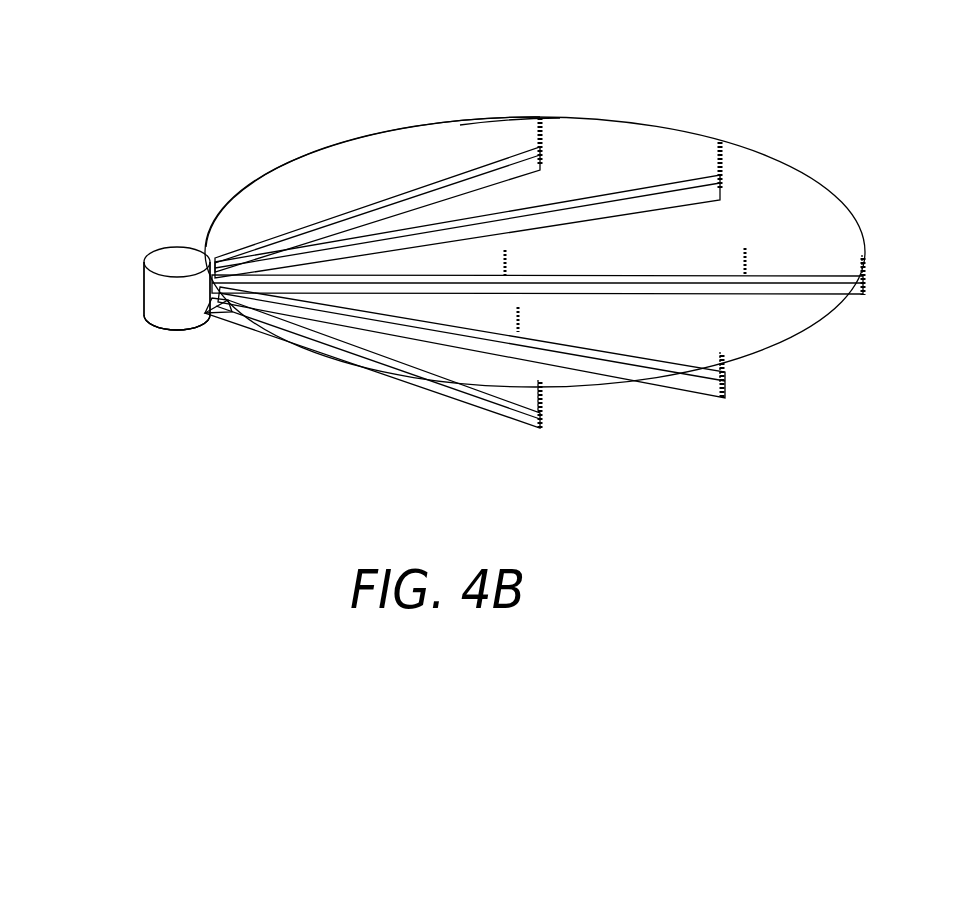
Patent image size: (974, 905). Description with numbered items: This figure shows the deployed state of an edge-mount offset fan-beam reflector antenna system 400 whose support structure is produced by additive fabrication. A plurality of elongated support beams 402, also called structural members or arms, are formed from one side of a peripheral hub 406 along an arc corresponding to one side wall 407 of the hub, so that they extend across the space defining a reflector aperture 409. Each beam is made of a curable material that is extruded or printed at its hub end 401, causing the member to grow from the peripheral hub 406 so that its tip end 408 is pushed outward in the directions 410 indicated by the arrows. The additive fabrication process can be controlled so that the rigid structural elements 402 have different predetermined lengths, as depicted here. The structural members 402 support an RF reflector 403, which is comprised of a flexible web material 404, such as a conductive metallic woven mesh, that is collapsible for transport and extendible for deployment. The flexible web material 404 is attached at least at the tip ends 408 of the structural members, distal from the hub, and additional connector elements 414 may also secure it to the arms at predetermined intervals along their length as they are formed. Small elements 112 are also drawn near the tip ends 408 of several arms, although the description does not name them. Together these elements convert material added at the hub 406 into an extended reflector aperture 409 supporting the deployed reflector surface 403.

The sensor 112 is at (864, 258).
The antenna system 400 is at (142, 243).
The hub end 401 is at (207, 300).
The elongated support beam 402 is at (436, 192).
The RF reflector 403 is at (265, 165).
The flexible web material 404 is at (472, 128).
The peripheral hub 406 is at (178, 347).
The side wall 407 is at (212, 322).
The tip end 408 is at (545, 170).
The reflector aperture 409 is at (367, 88).
The direction 410 is at (573, 141).
The additional connector element 414 is at (503, 268).